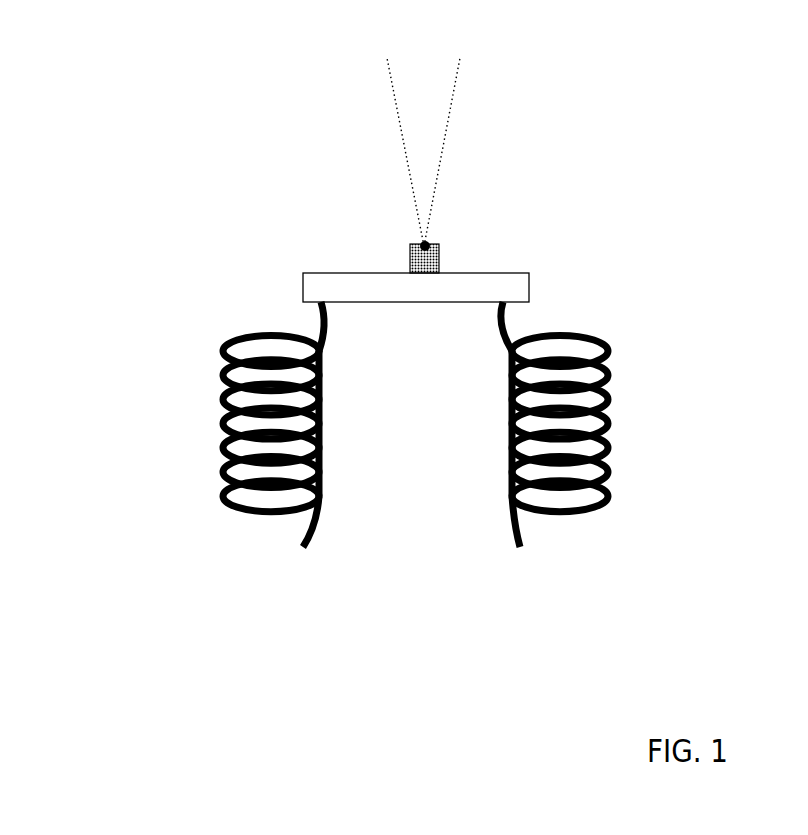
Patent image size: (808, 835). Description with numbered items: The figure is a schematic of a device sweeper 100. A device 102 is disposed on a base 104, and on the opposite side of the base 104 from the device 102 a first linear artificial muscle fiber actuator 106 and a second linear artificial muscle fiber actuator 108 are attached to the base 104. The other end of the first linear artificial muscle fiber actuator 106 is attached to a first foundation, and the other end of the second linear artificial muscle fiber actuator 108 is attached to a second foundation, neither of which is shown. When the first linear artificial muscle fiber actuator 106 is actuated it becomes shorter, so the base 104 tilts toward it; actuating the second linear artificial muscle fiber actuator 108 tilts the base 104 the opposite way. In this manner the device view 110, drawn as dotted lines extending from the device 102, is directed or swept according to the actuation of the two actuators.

The device sweeper 100 is at (703, 153).
The device 102 is at (419, 247).
The base 104 is at (527, 272).
The first linear artificial muscle fiber actuator 106 is at (195, 402).
The second linear artificial muscle fiber actuator 108 is at (613, 432).
The device view 110 is at (403, 138).